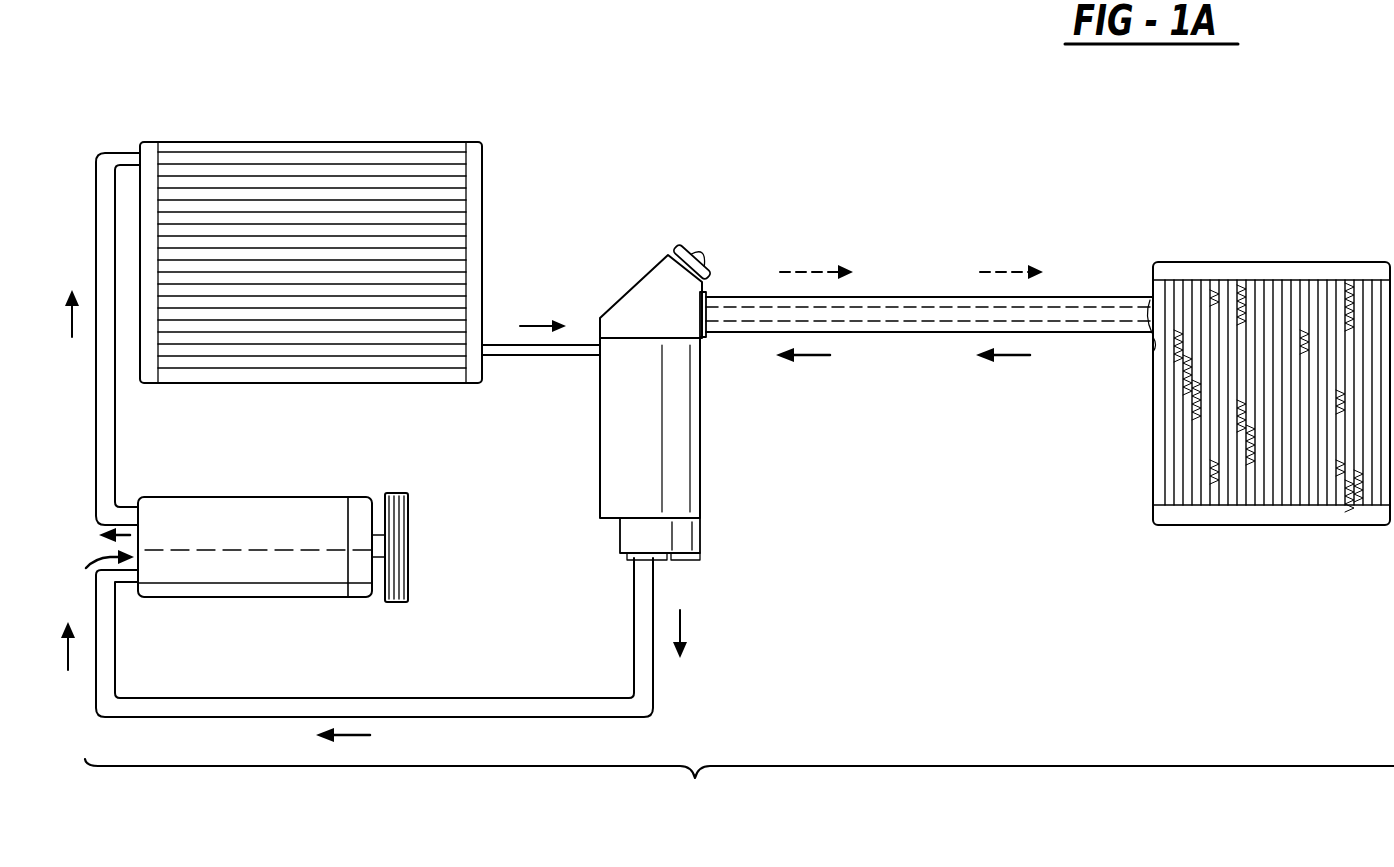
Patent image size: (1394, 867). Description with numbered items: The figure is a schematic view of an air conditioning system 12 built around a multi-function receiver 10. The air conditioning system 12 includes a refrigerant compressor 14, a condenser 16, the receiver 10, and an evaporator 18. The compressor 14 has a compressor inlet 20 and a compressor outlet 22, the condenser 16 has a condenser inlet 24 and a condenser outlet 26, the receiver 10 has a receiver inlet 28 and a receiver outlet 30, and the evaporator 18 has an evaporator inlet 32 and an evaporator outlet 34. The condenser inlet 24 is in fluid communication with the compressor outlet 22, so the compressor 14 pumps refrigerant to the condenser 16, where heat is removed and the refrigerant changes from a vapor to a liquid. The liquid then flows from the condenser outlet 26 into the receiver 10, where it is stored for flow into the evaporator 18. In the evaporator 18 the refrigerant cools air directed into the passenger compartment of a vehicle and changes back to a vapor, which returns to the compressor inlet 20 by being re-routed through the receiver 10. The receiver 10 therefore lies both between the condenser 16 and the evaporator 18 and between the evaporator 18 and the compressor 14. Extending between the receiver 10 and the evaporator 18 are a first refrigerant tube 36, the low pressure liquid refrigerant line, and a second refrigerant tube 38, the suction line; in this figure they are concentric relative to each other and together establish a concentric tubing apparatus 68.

The multi-function receiver 10 is at (596, 236).
The air conditioning system 12 is at (739, 786).
The refrigerant compressor 14 is at (303, 598).
The condenser 16 is at (137, 152).
The evaporator 18 is at (1152, 477).
The compressor inlet 20 is at (139, 590).
The compressor outlet 22 is at (131, 506).
The condenser inlet 24 is at (102, 339).
The condenser outlet 26 is at (499, 356).
The receiver inlet 28 is at (600, 356).
The receiver outlet 30 is at (633, 560).
The evaporator inlet 32 is at (1155, 347).
The evaporator outlet 34 is at (1151, 300).
The first refrigerant tube 36 is at (862, 310).
The second refrigerant tube 38 is at (1065, 296).
The concentric tubing apparatus 68 is at (738, 268).